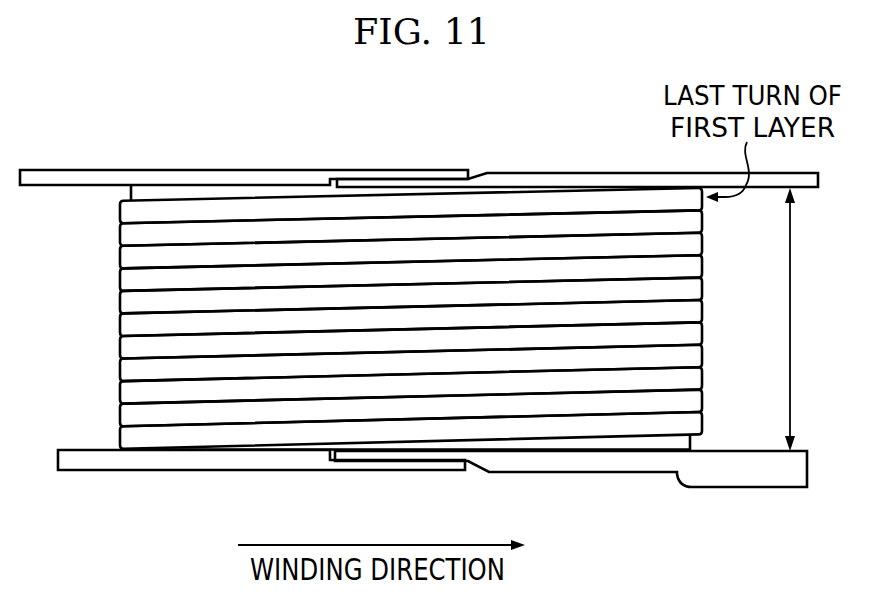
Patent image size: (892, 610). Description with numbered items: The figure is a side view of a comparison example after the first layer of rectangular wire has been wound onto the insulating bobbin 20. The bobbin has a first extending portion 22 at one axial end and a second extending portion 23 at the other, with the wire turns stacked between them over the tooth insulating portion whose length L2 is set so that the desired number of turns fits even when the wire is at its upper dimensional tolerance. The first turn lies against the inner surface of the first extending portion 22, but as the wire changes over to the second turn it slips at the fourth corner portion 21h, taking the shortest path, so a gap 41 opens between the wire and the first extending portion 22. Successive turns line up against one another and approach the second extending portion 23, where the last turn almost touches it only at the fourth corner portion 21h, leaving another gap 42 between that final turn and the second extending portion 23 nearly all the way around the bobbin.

The insulating bobbin 20 is at (423, 158).
The fourth corner portion 21h is at (691, 443).
The first extending portion 22 is at (163, 472).
The second extending portion 23 is at (572, 172).
The gap 41 is at (657, 447).
The gap 42 is at (124, 192).
The length of tooth insulating portion L2 is at (804, 319).